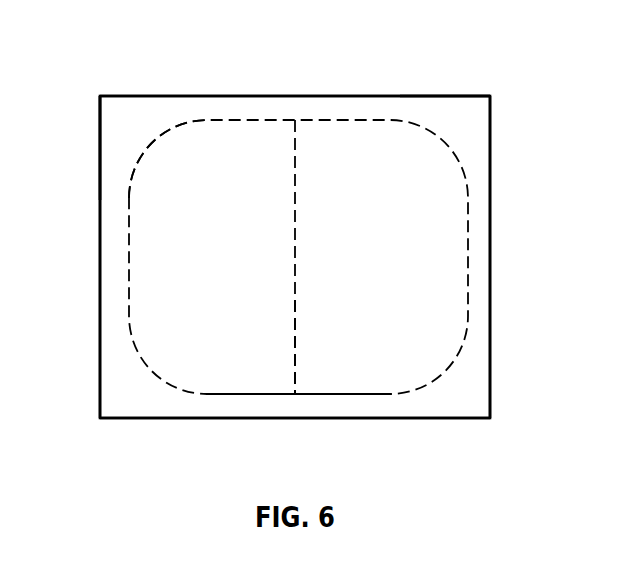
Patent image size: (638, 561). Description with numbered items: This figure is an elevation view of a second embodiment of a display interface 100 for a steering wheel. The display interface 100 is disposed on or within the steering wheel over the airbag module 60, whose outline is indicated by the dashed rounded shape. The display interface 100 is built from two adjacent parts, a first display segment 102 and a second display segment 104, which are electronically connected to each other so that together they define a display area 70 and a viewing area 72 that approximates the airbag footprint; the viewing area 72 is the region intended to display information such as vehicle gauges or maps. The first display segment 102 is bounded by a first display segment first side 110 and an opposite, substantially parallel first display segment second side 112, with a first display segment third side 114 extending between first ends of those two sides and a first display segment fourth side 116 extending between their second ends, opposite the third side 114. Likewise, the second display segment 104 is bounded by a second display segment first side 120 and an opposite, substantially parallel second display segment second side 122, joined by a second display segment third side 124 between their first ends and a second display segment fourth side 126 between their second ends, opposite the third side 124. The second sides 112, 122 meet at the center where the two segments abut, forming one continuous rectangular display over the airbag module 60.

The airbag module 60 is at (470, 201).
The display area 70 is at (108, 115).
The viewing area 72 is at (148, 182).
The display interface 100 is at (514, 257).
The first display segment 102 is at (178, 93).
The second display segment 104 is at (373, 80).
The first display segment first side 110 is at (99, 294).
The first display segment second side 112 is at (294, 394).
The first display segment third side 114 is at (258, 95).
The first display segment fourth side 116 is at (166, 420).
The second display segment first side 120 is at (492, 340).
The second display segment second side 122 is at (295, 400).
The second display segment third side 124 is at (418, 96).
The second display segment fourth side 126 is at (421, 418).